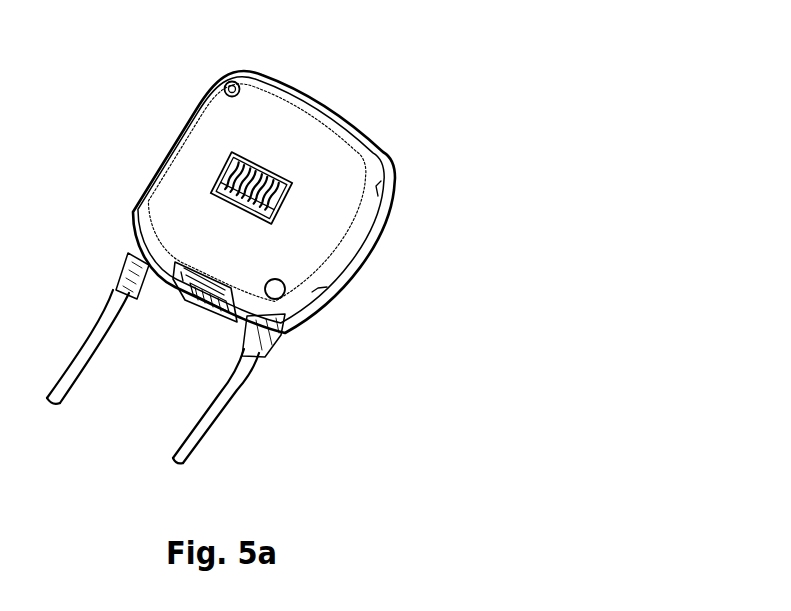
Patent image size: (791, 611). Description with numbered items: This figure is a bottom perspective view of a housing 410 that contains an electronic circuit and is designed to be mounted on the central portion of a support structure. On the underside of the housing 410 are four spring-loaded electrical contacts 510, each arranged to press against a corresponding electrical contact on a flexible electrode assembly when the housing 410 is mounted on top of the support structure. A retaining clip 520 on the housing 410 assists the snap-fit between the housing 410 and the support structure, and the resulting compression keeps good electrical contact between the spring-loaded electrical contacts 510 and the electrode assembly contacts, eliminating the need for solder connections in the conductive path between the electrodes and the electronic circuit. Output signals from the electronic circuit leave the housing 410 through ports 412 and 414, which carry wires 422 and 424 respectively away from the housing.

The housing 410 is at (265, 110).
The spring-loaded electrical contacts 510 is at (272, 170).
The retaining clip 520 is at (185, 302).
The port 414 is at (137, 280).
The port 412 is at (263, 333).
The wire 424 is at (62, 387).
The wire 422 is at (196, 424).